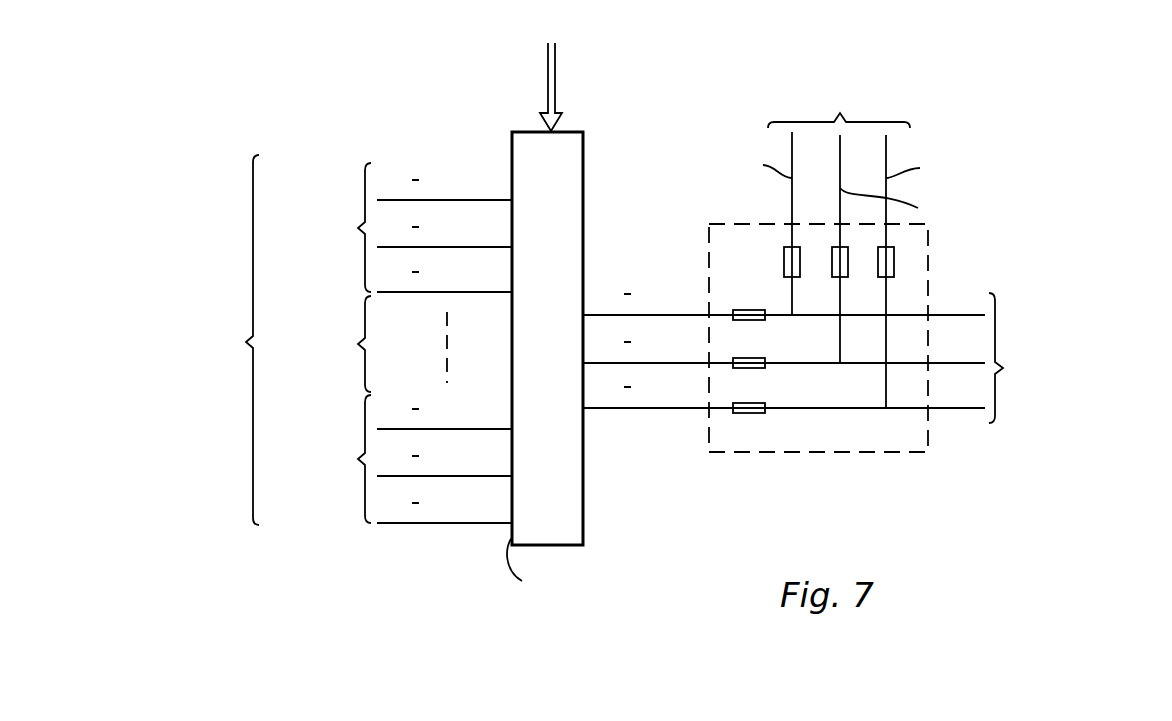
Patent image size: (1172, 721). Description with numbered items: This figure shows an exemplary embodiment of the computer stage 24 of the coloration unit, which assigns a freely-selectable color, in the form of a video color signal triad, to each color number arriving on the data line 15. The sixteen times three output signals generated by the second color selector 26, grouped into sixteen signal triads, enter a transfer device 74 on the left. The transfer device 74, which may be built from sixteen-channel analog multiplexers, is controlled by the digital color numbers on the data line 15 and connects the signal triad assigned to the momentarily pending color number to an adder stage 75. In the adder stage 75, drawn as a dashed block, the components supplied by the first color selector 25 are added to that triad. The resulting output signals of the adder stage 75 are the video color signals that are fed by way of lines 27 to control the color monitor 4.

The data line 15 is at (556, 82).
The transfer device 74 is at (568, 522).
The second color selector 26 is at (310, 340).
The first color selector 25 is at (835, 245).
The computer stage 24 is at (784, 308).
The adder stage 75 is at (787, 432).
The lines 27 is at (945, 380).
The color monitor 4 is at (1072, 358).